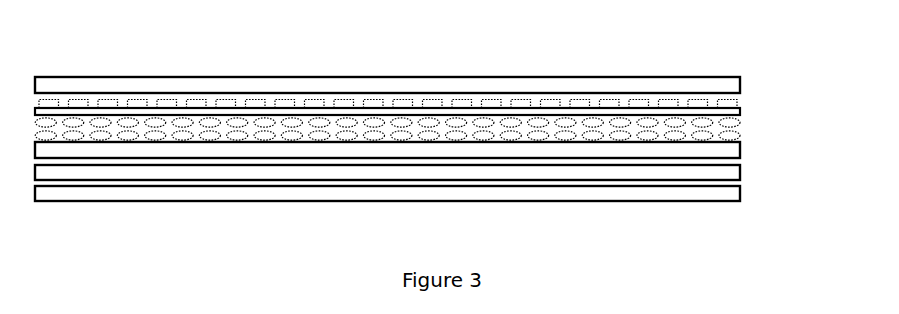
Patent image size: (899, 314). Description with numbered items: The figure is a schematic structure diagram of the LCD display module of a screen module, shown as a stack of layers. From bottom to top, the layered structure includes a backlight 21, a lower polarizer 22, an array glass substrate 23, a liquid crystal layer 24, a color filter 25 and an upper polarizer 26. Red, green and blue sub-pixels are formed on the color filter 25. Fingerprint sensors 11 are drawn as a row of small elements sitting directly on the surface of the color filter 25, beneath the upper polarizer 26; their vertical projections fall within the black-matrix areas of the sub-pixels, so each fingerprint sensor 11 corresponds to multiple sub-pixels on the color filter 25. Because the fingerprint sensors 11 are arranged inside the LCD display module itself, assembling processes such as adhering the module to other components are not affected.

The fingerprint sensor 11 is at (407, 101).
The backlight 21 is at (649, 194).
The lower polarizer 22 is at (733, 172).
The array glass substrate 23 is at (737, 152).
The liquid crystal layer 24 is at (737, 130).
The color filter 25 is at (740, 108).
The upper polarizer 26 is at (585, 87).